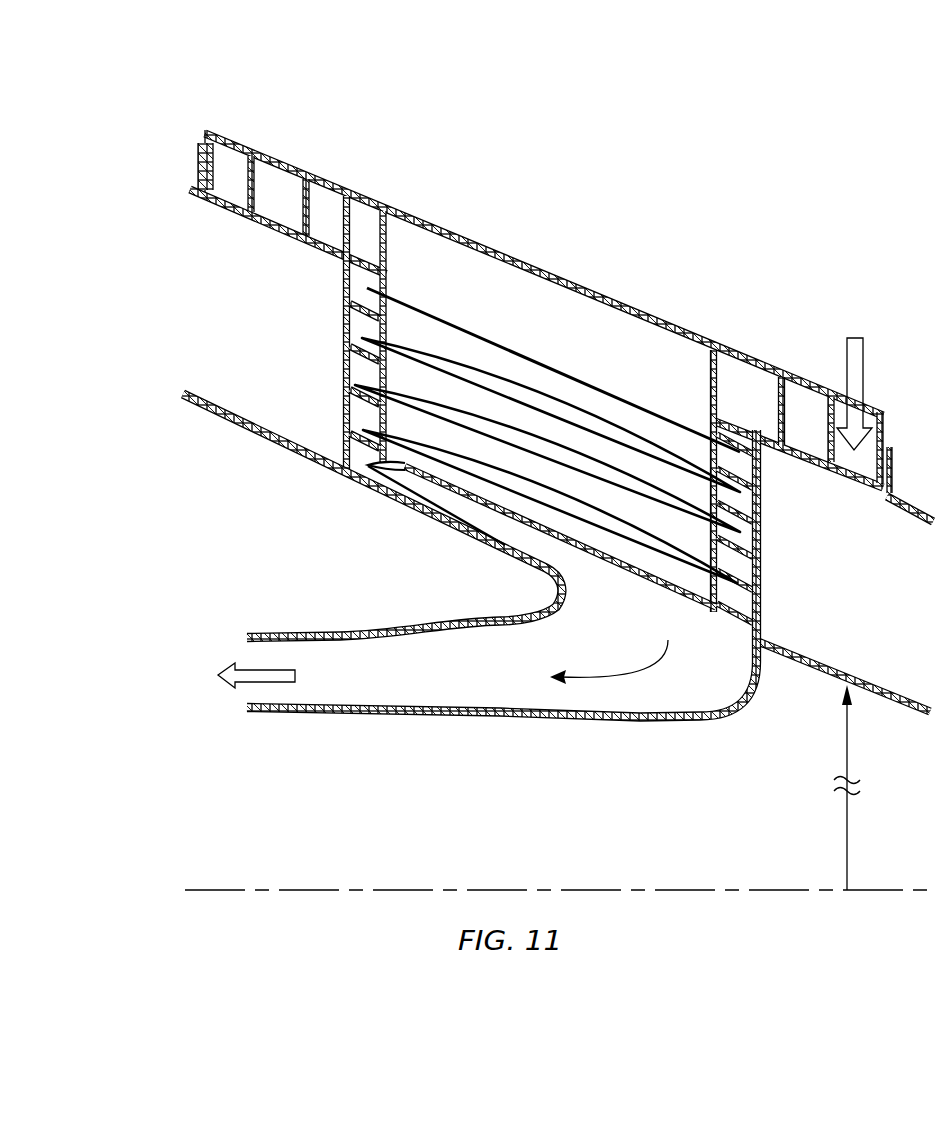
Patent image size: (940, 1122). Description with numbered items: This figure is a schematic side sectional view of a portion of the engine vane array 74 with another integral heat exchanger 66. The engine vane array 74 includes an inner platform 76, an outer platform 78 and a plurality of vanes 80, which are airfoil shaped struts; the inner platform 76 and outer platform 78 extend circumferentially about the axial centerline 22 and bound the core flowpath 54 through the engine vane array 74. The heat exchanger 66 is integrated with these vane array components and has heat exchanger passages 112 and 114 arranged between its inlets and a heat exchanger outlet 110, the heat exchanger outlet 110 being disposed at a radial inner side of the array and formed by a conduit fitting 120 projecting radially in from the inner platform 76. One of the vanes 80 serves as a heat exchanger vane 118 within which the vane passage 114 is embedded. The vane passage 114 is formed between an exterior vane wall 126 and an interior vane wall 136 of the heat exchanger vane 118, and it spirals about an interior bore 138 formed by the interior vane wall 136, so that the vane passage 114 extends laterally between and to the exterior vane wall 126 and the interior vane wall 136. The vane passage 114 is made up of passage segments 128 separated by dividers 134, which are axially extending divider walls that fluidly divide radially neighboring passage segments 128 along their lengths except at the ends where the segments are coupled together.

The axial centerline 22 is at (205, 886).
The core flowpath 54 is at (203, 285).
The heat exchanger 66 is at (380, 188).
The engine vane array 74 is at (315, 118).
The inner platform 76 is at (168, 383).
The outer platform 78 is at (168, 183).
The vanes 80 is at (452, 462).
The heat exchanger outlet 110 is at (487, 615).
The heat exchanger passage 112 is at (760, 388).
The vane passage 114 is at (592, 385).
The heat exchanger vane 118 is at (542, 534).
The conduit fitting 120 is at (256, 675).
The exterior vane wall 126 is at (345, 280).
The passage segments 128 is at (742, 542).
The dividers 134 is at (347, 373).
The interior vane wall 136 is at (383, 317).
The interior bore 138 is at (511, 298).